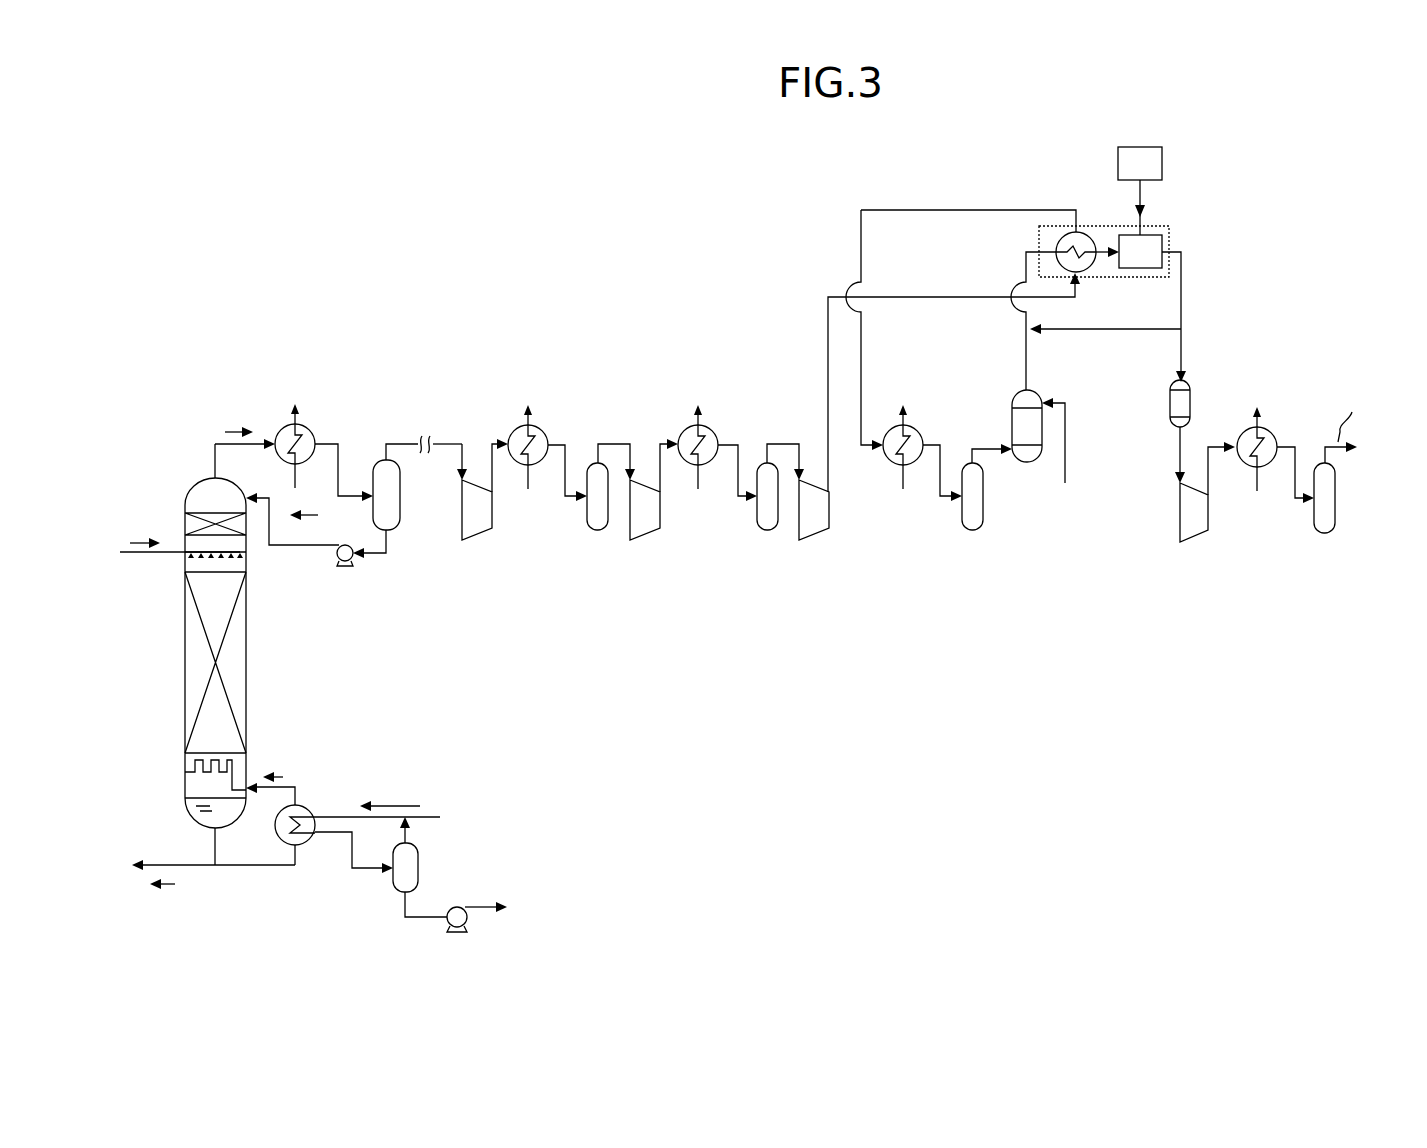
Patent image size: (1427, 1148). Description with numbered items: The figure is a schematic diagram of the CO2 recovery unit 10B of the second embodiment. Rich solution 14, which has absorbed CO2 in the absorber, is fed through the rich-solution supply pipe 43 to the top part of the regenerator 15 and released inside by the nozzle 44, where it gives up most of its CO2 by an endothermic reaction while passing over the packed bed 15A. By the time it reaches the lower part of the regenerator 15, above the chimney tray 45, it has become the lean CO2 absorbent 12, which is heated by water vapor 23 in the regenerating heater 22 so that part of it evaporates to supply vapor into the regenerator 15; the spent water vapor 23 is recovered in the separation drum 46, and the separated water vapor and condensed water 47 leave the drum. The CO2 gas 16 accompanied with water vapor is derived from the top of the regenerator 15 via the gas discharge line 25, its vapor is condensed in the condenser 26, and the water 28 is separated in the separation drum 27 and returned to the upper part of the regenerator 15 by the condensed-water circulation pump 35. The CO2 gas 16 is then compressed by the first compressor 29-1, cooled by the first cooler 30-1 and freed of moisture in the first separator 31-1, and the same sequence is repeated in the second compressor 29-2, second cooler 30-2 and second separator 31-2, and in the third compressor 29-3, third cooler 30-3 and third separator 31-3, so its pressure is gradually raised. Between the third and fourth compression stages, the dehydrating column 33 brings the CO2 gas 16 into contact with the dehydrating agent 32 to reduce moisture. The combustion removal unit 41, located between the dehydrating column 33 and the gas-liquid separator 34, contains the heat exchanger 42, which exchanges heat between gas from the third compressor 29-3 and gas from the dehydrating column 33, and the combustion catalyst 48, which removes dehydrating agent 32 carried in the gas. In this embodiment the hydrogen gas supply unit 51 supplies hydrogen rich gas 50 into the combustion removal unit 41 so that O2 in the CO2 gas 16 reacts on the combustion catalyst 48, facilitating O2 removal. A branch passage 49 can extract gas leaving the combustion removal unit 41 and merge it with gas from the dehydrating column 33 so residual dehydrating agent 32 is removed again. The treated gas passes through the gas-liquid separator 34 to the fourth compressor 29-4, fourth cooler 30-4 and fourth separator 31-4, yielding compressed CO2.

The CO2 recovery unit 10B is at (290, 250).
The CO2 absorbent 12 is at (286, 776).
The rich solution 14 is at (128, 538).
The regenerator 15 is at (158, 440).
The packed bed 15A is at (185, 660).
The CO2 gas 16 is at (232, 430).
The regenerating heater 22 is at (308, 845).
The water vapor 23 is at (390, 804).
The gas discharge line 25 is at (212, 450).
The condenser 26 is at (310, 428).
The separation drum 27 is at (396, 532).
The water 28 is at (308, 534).
The first compressor 29-1 is at (474, 540).
The second compressor 29-2 is at (640, 542).
The third compressor 29-3 is at (814, 542).
The fourth compressor 29-4 is at (1194, 544).
The first cooler 30-1 is at (550, 426).
The second cooler 30-2 is at (720, 426).
The third cooler 30-3 is at (925, 426).
The fourth cooler 30-4 is at (1264, 420).
The first separator 31-1 is at (596, 531).
The second separator 31-2 is at (770, 533).
The third separator 31-3 is at (976, 533).
The fourth separator 31-4 is at (1328, 535).
The dehydrating agent 32 is at (1061, 454).
The dehydrating column 33 is at (1026, 464).
The gas-liquid separator 34 is at (1170, 403).
The condensed-water circulation pump 35 is at (346, 562).
The combustion removal unit 41 is at (1086, 226).
The heat exchanger 42 is at (1052, 244).
The rich-solution supply pipe 43 is at (150, 554).
The nozzle 44 is at (244, 558).
The chimney tray 45 is at (186, 765).
The separation drum 46 is at (420, 868).
The water vapor and condensed water 47 is at (486, 908).
The combustion catalyst 48 is at (1127, 235).
The branch passage 49 is at (1104, 330).
The hydrogen rich gas 50 is at (1148, 196).
The hydrogen gas supply unit 51 is at (1142, 147).